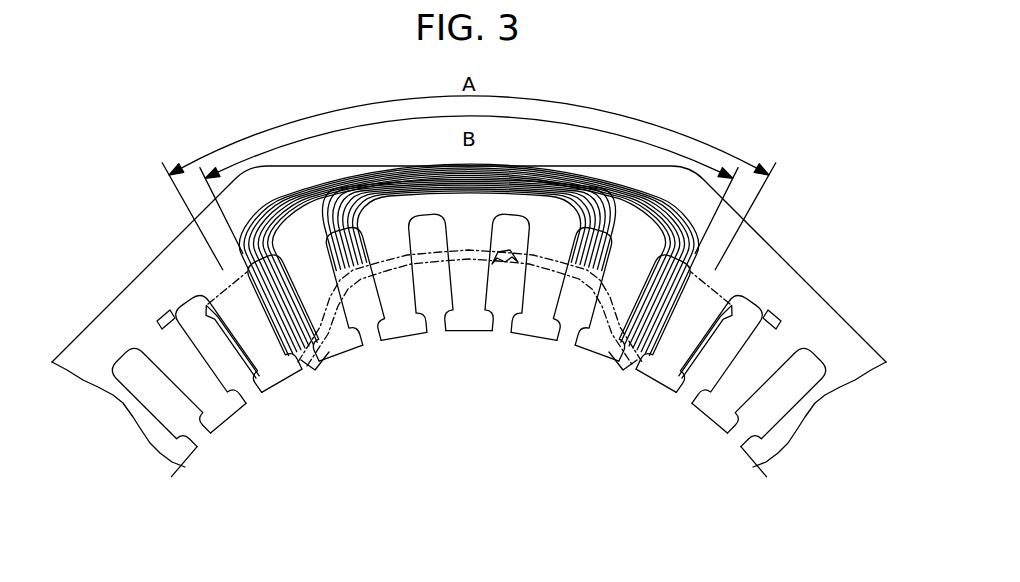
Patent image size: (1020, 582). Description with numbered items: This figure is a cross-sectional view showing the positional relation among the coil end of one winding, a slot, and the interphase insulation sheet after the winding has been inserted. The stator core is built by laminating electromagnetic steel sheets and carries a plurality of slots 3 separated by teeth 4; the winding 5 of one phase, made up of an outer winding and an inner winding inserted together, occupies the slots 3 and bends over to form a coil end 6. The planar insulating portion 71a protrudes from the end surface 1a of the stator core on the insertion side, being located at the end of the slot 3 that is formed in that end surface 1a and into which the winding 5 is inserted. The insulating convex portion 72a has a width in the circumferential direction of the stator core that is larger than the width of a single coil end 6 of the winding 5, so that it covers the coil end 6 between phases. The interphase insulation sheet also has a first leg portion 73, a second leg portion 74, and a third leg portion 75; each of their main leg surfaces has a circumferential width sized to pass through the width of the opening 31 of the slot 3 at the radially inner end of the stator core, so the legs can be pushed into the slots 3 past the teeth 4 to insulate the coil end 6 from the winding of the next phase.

The end surface 1a is at (101, 326).
The slot 3 is at (309, 362).
The teeth 4 is at (627, 360).
The winding 5 is at (343, 228).
The coil end 6 is at (547, 172).
The opening 31 is at (369, 352).
The planar insulating portion 71a is at (162, 312).
The insulating convex portion 72a is at (463, 255).
The first leg portion 73 is at (240, 382).
The second leg portion 74 is at (690, 382).
The third leg portion 75 is at (503, 264).